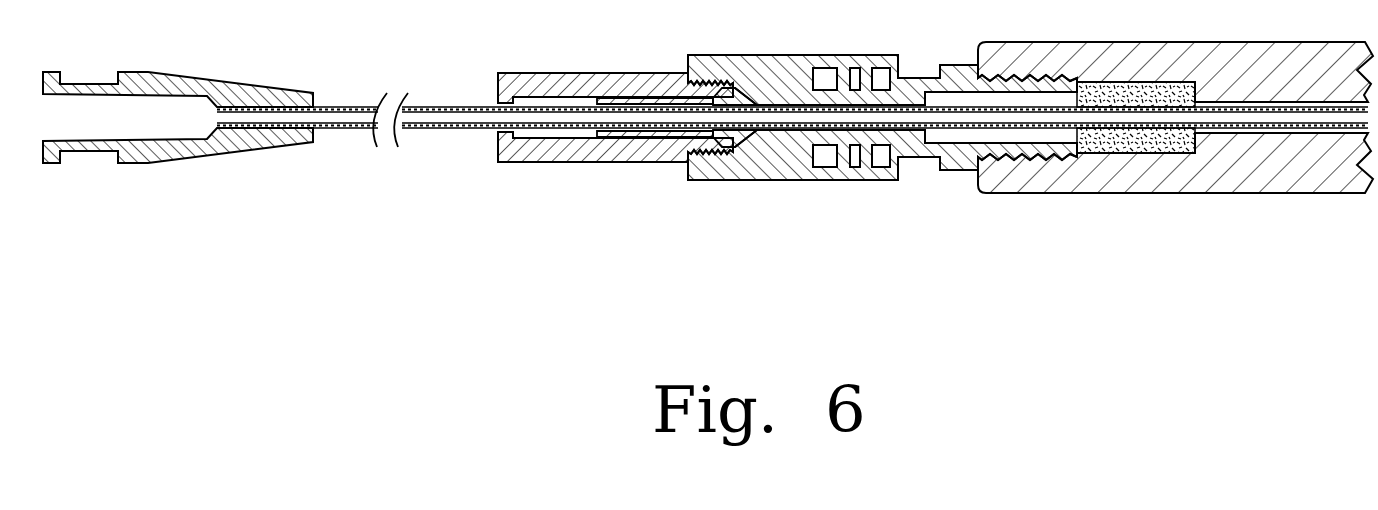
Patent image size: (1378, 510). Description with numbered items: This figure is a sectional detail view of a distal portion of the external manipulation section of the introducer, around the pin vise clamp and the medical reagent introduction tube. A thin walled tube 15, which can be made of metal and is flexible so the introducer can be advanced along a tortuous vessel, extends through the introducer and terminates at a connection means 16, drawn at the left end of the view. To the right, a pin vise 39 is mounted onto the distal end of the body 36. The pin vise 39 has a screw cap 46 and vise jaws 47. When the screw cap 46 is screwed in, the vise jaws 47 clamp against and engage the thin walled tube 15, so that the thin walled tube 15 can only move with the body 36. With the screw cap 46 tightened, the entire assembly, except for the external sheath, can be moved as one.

The thin walled tube 15 is at (455, 129).
The connection means 16 is at (197, 148).
The body 36 is at (1168, 190).
The pin vise 39 is at (860, 206).
The screw cap 46 is at (572, 163).
The vise jaws 47 is at (743, 138).